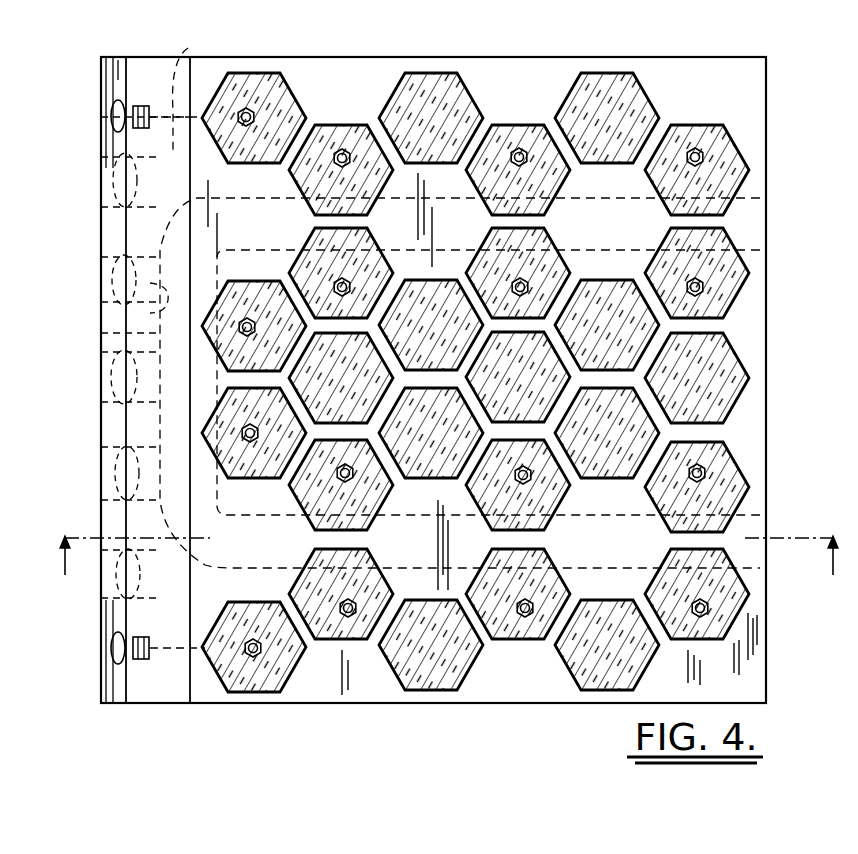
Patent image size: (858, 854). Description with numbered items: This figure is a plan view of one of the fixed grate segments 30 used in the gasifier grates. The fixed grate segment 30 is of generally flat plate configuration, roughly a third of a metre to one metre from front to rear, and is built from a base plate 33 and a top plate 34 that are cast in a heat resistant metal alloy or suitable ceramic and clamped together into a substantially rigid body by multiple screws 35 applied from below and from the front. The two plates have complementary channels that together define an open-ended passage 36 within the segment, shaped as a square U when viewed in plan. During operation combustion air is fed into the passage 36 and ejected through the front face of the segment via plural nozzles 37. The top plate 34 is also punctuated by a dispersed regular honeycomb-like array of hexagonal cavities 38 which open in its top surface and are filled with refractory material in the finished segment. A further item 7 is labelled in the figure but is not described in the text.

The fixed grate segment 30 is at (772, 340).
The base plate 33 is at (101, 240).
The top plate 34 is at (748, 675).
The screws 35 is at (190, 47).
The passage 36 is at (101, 333).
The nozzles 37 is at (101, 428).
The hexagonal cavities 38 is at (452, 107).
The section line 7- 7 is at (449, 566).